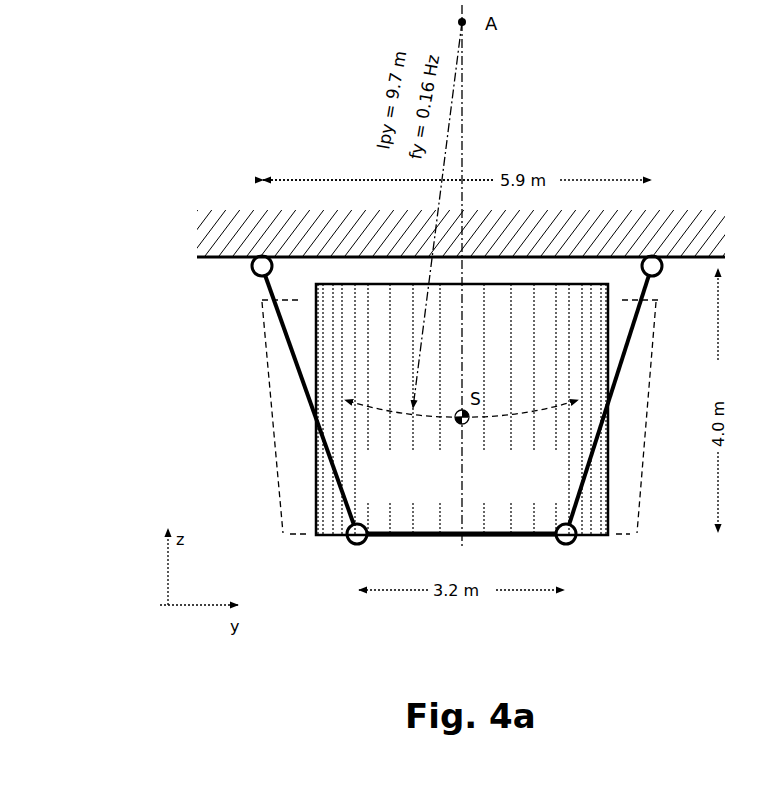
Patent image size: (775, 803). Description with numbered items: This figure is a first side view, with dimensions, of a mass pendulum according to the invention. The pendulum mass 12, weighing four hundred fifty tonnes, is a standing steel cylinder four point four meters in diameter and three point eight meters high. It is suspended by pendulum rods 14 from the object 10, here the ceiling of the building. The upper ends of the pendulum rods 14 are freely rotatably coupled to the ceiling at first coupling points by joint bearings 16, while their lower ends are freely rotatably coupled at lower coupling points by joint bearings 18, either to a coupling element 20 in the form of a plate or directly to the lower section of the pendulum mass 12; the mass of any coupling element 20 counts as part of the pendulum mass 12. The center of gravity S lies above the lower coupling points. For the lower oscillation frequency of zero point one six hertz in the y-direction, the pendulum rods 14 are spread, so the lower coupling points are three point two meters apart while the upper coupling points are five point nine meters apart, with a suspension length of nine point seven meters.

The object 10 is at (193, 235).
The pendulum mass 12 is at (611, 490).
The pendulum rods 14 is at (295, 368).
The joint bearings 16 is at (252, 273).
The joint bearings 18 is at (351, 547).
The coupling element 20 is at (538, 547).